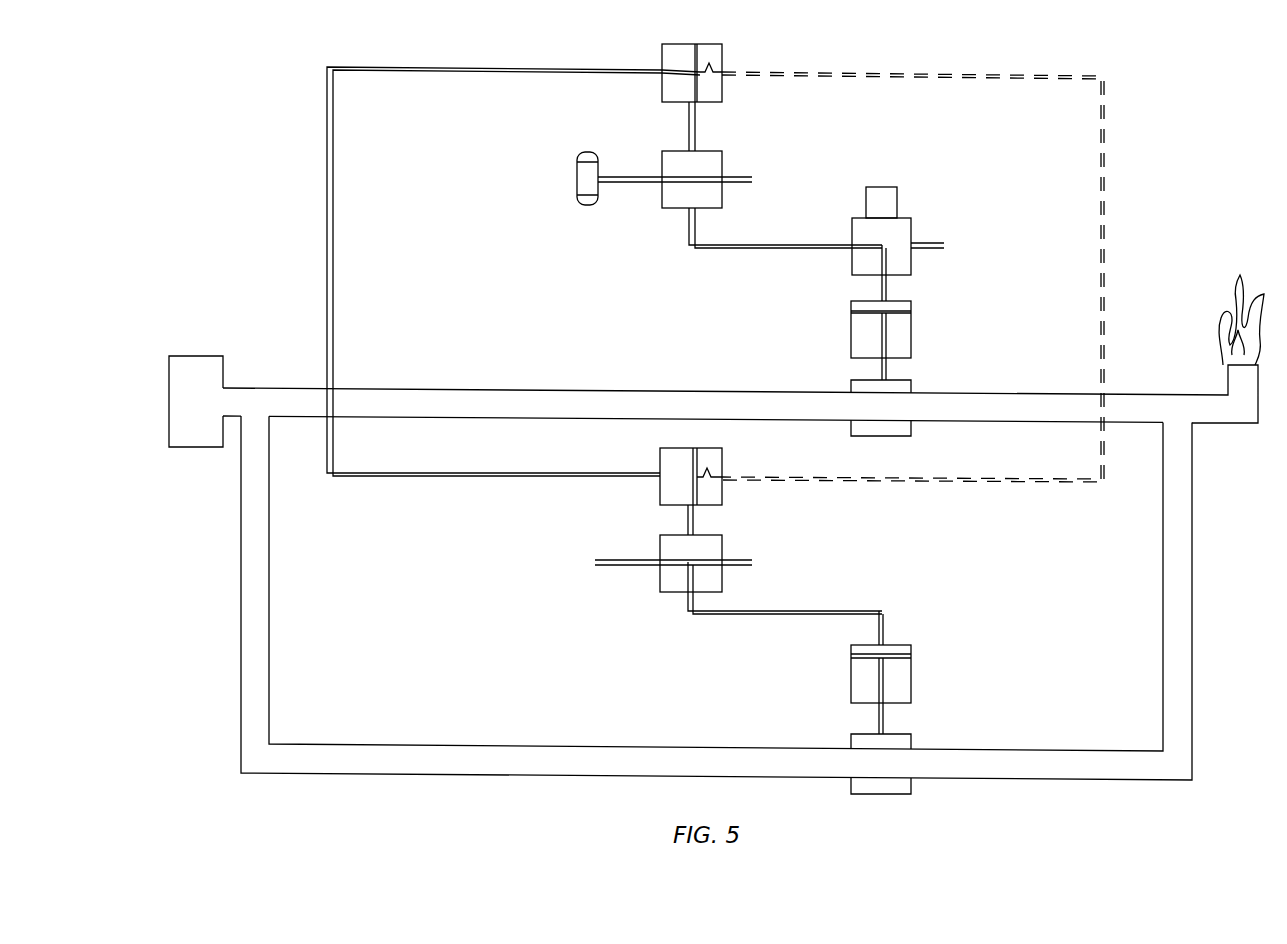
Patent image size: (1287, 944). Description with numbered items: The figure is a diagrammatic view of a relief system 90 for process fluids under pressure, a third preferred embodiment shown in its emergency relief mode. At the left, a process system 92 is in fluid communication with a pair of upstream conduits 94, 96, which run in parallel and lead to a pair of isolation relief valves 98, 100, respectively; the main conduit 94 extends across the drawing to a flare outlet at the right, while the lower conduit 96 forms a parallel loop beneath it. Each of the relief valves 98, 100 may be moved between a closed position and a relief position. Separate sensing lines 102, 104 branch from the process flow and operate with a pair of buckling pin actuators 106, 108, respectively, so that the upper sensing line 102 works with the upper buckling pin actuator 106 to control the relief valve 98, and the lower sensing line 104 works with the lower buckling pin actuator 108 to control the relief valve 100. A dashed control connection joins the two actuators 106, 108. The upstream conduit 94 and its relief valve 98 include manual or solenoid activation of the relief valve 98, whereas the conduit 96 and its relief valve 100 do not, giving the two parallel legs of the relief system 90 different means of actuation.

The relief system 90 is at (248, 112).
The process system 92 is at (205, 356).
The upstream conduit 94 is at (285, 388).
The upstream conduit 96 is at (337, 773).
The isolation relief valve 98 is at (894, 436).
The isolation relief valve 100 is at (905, 734).
The sensing line 102 is at (328, 243).
The sensing line 104 is at (373, 476).
The buckling pin actuator 106 is at (722, 52).
The buckling pin actuator 108 is at (660, 487).